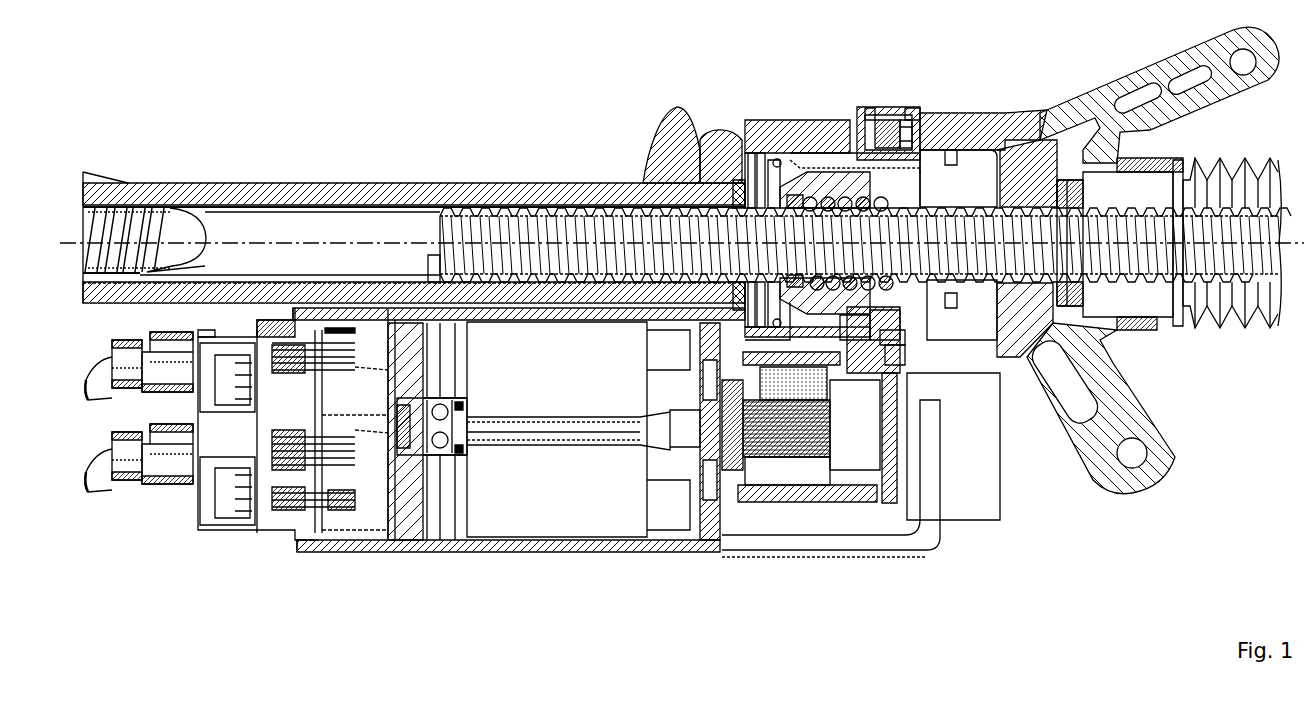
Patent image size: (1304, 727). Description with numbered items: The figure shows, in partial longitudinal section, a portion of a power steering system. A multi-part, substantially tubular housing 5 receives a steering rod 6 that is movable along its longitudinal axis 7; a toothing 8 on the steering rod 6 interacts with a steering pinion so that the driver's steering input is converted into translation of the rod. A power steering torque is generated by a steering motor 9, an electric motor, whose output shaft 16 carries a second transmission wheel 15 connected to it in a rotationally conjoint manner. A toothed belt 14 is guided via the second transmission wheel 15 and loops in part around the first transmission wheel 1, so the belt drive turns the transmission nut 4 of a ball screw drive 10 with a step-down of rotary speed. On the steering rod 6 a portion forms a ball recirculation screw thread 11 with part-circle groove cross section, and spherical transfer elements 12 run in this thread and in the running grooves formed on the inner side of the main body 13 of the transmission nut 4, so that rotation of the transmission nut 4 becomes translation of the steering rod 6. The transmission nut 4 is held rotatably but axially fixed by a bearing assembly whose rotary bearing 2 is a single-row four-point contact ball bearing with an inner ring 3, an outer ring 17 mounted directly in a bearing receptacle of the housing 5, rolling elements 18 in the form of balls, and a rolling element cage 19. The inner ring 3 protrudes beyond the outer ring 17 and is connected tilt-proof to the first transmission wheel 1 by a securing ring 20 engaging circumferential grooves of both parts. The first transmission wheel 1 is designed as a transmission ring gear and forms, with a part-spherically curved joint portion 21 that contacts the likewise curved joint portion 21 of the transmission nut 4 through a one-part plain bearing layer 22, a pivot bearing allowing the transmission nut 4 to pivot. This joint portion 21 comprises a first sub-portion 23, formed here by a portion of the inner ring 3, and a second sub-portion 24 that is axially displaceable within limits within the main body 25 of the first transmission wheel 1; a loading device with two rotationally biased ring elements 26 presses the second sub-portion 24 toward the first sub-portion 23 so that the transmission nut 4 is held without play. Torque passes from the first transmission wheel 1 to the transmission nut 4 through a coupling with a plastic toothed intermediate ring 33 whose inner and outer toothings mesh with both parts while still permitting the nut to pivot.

The first transmission wheel 1 is at (735, 172).
The rotary bearing 2 is at (922, 123).
The inner ring 3 is at (953, 153).
The transmission nut 4 is at (932, 312).
The housing 5 is at (443, 190).
The steering rod 6 is at (400, 235).
The longitudinal axis 7 is at (320, 243).
The toothing 8 is at (120, 200).
The steering motor 9 is at (185, 548).
The ball screw drive 10 is at (942, 197).
The ball recirculation screw thread 11 is at (540, 203).
The spherical transfer elements 12 is at (893, 330).
The main body 13 is at (897, 353).
The belt 14 is at (763, 387).
The second transmission wheel 15 is at (790, 335).
The output shaft 16 is at (488, 440).
The outer ring 17 is at (877, 137).
The rolling elements 18 is at (883, 150).
The rolling element cage 19 is at (900, 143).
The securing ring 20 is at (817, 162).
The joint portion 21 is at (797, 160).
The plain bearing layer 22 is at (873, 283).
The first sub-portion 23 is at (853, 303).
The second sub-portion 24 is at (835, 332).
The main body 25 is at (753, 173).
The ring elements 26 is at (772, 300).
The toothed intermediate ring 33 is at (798, 165).